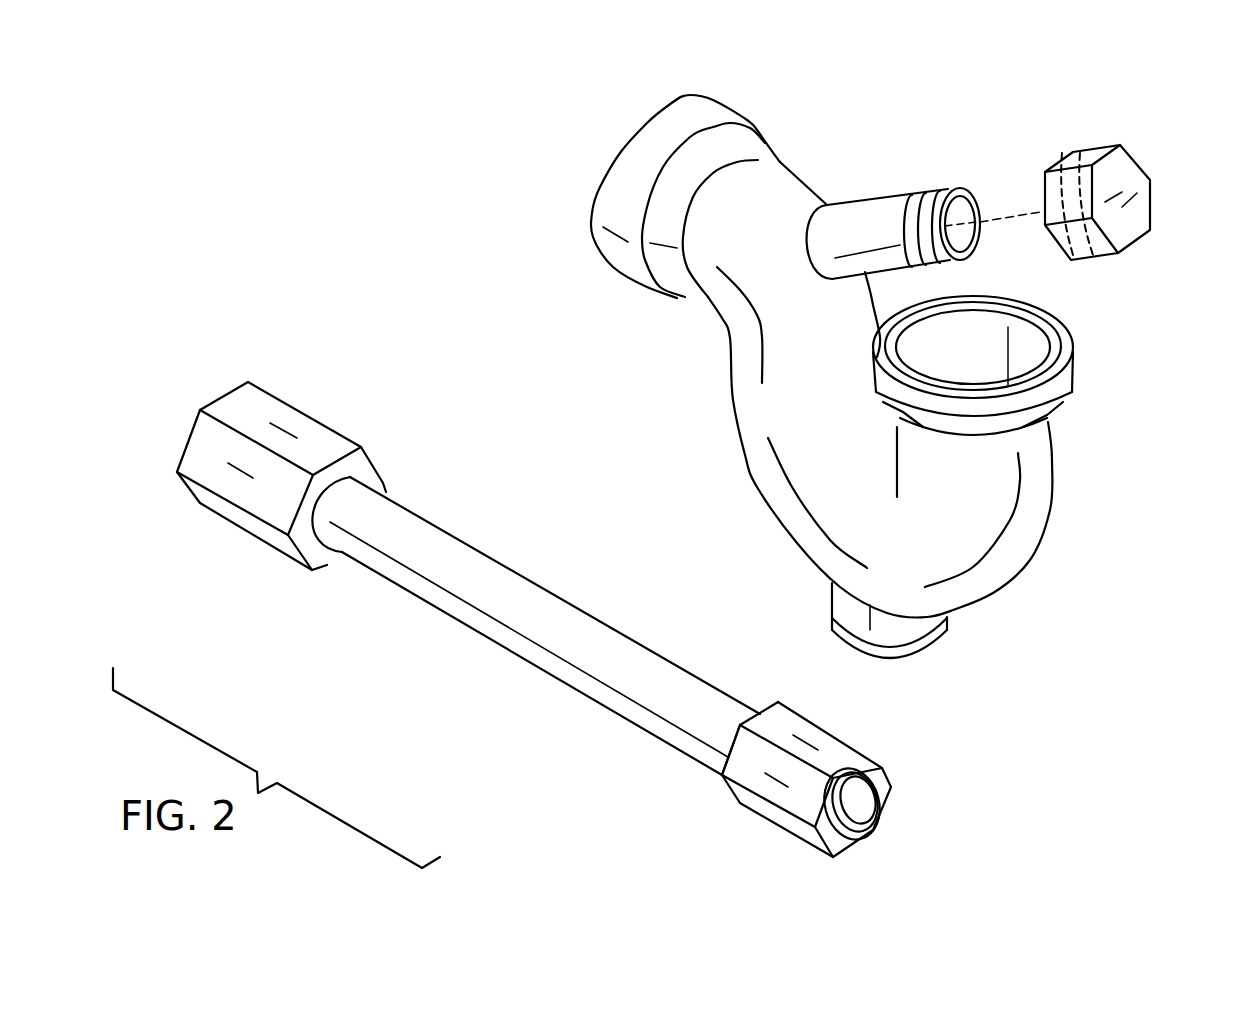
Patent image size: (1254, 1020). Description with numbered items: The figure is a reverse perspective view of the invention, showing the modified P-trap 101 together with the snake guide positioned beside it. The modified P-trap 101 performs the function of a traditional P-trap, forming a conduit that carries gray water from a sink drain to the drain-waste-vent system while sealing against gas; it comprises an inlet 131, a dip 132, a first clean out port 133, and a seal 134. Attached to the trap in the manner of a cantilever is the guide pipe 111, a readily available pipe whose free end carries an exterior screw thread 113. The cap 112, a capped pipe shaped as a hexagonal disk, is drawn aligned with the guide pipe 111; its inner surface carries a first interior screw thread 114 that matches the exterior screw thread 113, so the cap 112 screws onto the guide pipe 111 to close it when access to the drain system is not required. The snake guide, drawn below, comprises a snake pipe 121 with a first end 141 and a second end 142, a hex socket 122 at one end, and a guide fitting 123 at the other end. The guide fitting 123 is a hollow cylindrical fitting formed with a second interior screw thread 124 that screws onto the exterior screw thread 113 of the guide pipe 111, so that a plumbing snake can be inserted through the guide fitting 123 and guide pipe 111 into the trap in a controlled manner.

The modified P-trap 101 is at (728, 332).
The guide pipe 111 is at (877, 210).
The cap 112 is at (1125, 170).
The exterior screw thread 113 is at (952, 190).
The first interior screw thread 114 is at (1080, 153).
The snake pipe 121 is at (447, 553).
The hex socket 122 is at (293, 420).
The guide fitting 123 is at (880, 770).
The second interior screw thread 124 is at (860, 807).
The inlet 131 is at (1040, 458).
The dip 132 is at (980, 593).
The first clean out port 133 is at (847, 608).
The seal 134 is at (753, 415).
The first end 141 is at (330, 533).
The second end 142 is at (705, 752).